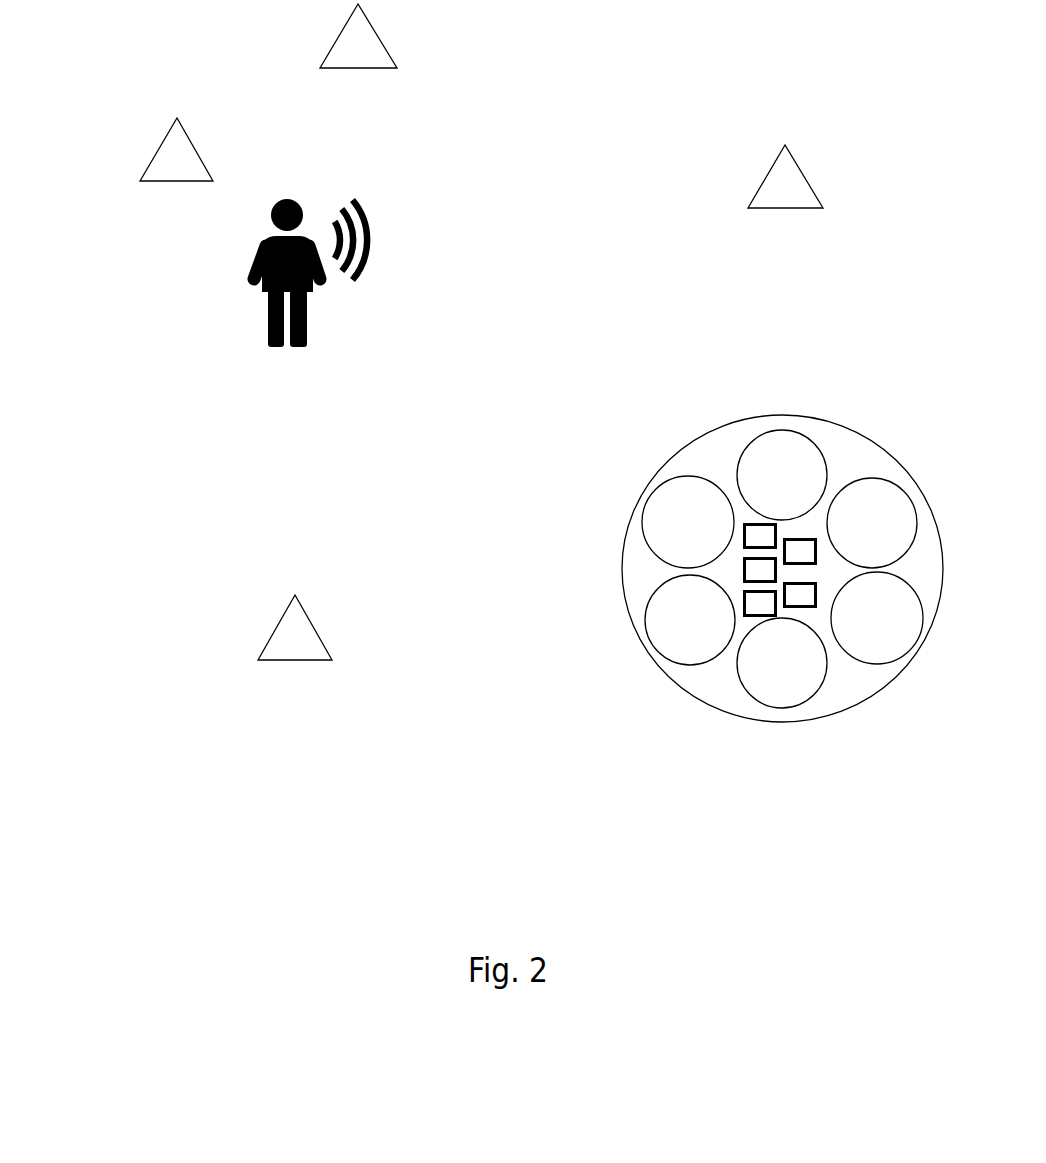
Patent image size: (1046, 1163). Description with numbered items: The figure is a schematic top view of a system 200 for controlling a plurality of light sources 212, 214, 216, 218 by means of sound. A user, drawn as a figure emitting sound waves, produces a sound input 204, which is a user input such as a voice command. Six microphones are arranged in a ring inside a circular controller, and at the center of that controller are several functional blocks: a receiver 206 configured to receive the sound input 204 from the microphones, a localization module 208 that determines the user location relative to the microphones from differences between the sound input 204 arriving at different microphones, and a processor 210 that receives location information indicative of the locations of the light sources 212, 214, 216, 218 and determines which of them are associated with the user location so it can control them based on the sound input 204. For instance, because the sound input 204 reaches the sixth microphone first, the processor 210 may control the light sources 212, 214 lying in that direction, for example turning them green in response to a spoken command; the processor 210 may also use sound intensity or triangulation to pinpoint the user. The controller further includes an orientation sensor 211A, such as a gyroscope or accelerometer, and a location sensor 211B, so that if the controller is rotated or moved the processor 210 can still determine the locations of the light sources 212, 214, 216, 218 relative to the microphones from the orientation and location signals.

The system 200 is at (533, 869).
The sound input 204 is at (350, 224).
The receiver 206 is at (745, 568).
The localization module 208 is at (814, 608).
The processor 210 is at (812, 538).
The orientation sensor 211A is at (750, 522).
The location sensor 211B is at (777, 617).
The light source 212 is at (188, 164).
The light source 214 is at (358, 46).
The light source 216 is at (788, 189).
The light source 218 is at (273, 632).